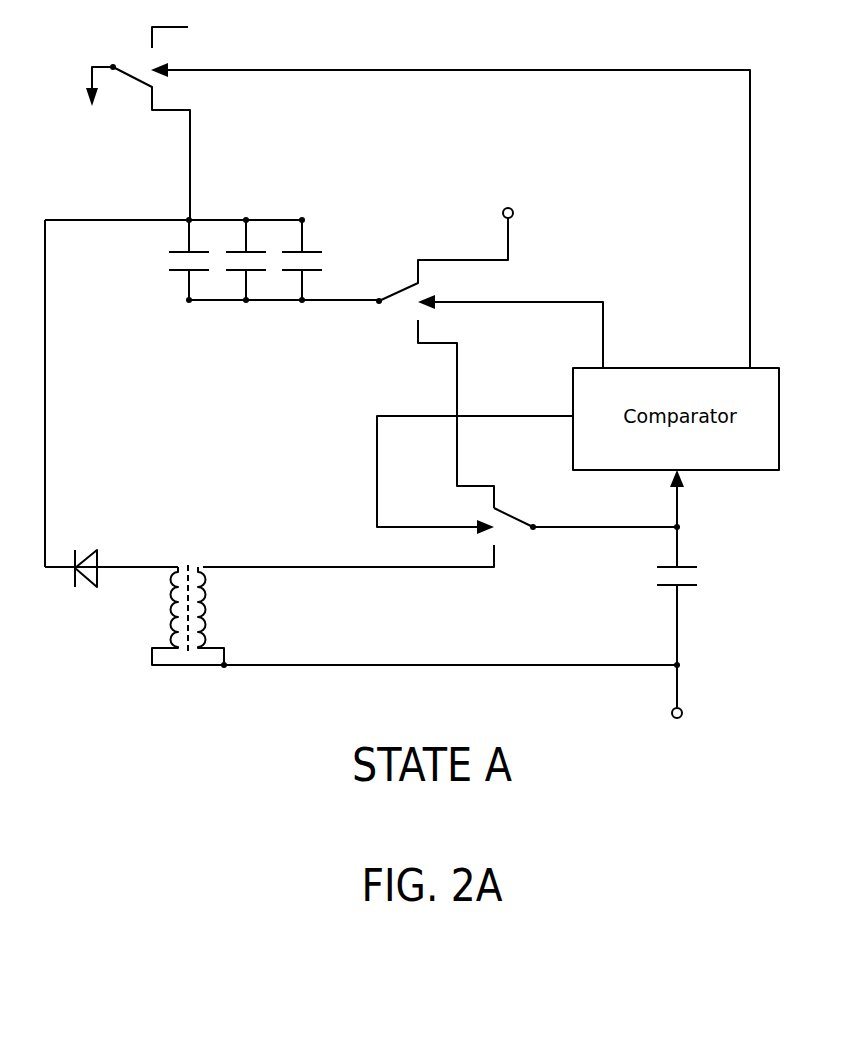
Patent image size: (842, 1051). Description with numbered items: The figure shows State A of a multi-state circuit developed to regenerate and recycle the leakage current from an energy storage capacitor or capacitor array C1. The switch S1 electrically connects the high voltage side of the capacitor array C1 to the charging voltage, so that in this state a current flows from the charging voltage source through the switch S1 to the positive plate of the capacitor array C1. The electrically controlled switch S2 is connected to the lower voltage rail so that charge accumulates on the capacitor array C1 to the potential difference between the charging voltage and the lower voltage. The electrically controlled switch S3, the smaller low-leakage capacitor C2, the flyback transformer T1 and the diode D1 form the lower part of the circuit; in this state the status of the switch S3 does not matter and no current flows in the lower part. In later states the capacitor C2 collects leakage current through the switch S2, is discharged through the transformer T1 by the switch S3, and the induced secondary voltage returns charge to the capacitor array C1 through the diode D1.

The switch S1 is at (418, 194).
The electrically controlled switch S2 is at (489, 354).
The electrically controlled switch S3 is at (441, 515).
The capacitor or capacitor array C1 is at (212, 392).
The capacitor C2 is at (476, 599).
The diode D1 is at (111, 556).
The flyback transformer T1 is at (189, 603).